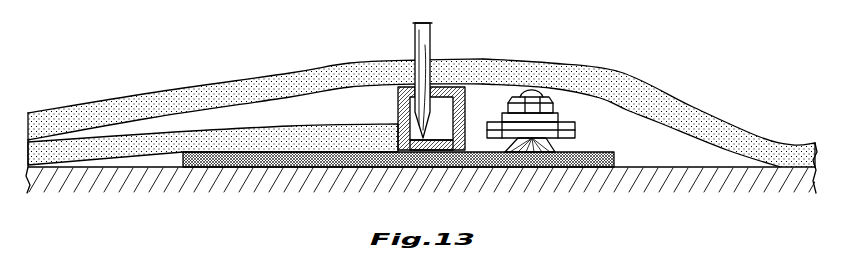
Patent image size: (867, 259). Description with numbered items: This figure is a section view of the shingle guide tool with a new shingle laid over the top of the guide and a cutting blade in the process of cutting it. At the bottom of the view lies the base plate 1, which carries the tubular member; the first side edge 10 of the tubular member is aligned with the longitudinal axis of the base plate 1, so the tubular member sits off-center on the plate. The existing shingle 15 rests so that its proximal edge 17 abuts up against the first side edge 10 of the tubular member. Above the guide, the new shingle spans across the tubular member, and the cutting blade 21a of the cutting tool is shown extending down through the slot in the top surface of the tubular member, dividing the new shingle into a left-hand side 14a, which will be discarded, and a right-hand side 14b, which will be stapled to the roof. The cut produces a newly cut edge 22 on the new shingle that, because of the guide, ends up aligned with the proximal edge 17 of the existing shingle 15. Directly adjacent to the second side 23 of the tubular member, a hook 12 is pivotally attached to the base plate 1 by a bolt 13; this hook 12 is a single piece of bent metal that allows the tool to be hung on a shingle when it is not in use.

The base plate 1 is at (283, 168).
The first side edge of the tubular member 10 is at (398, 112).
The hook 12 is at (575, 131).
The bolt 13 is at (553, 103).
The left-hand side of the cut shingle 14a is at (275, 75).
The right-hand side of the cut shingle 14b is at (608, 72).
The existing shingle 15 is at (145, 143).
The proximal edge of the existing shingle 17 is at (411, 150).
The cutting blade 21a is at (415, 43).
The newly cut edge 22 is at (432, 47).
The second side of the tubular member 23 is at (652, 181).